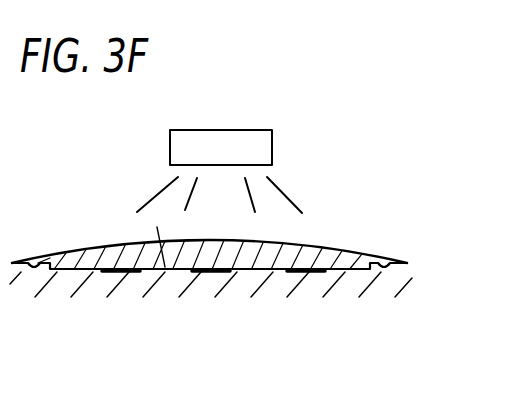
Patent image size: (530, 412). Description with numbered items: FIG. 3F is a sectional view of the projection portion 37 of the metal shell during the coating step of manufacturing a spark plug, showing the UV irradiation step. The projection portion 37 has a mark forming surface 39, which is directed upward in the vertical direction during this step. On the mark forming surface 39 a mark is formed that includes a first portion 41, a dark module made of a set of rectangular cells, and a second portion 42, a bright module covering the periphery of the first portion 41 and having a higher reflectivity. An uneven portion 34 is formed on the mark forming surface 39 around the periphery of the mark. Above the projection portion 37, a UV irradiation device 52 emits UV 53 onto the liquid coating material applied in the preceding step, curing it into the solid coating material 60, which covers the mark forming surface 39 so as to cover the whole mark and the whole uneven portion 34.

The UV irradiation device 52 is at (272, 150).
The UV 53 is at (278, 187).
The coating material 60 is at (213, 249).
The second portion 42 is at (160, 233).
The first portion 41 is at (112, 269).
The uneven portion 34 is at (39, 262).
The mark forming surface 39 is at (15, 262).
The projection portion 37 is at (170, 287).